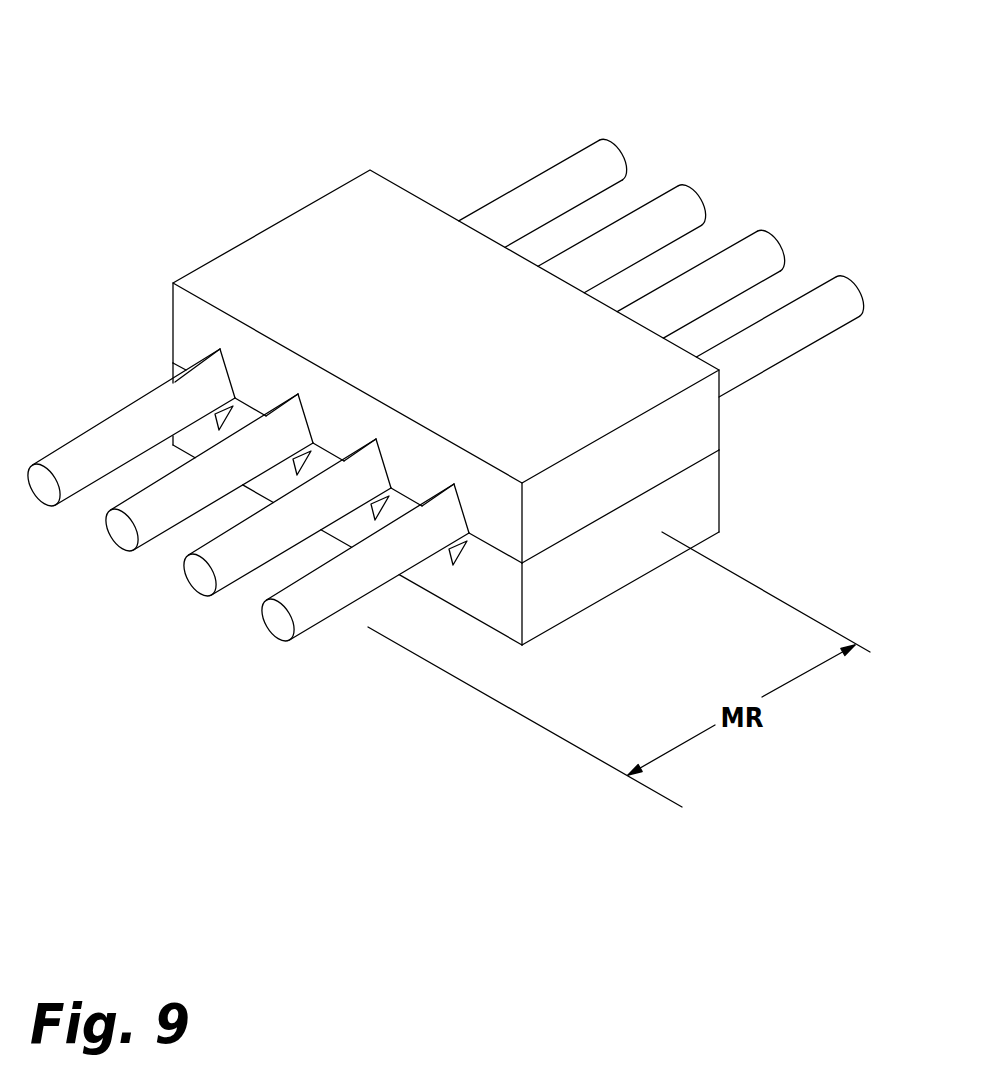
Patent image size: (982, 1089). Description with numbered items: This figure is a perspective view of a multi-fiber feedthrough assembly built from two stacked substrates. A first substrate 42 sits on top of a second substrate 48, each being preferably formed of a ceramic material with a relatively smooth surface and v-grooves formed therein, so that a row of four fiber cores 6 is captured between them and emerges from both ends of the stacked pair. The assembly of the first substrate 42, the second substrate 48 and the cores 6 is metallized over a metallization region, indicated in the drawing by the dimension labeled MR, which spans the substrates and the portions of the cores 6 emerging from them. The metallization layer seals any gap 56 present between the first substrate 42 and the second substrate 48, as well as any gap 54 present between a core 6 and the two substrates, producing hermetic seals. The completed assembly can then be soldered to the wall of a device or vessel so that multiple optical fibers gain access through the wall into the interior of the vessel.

The core 6 is at (561, 160).
The first substrate 42 is at (325, 192).
The second substrate 48 is at (720, 503).
The gap 54 is at (212, 362).
The gap 56 is at (173, 383).